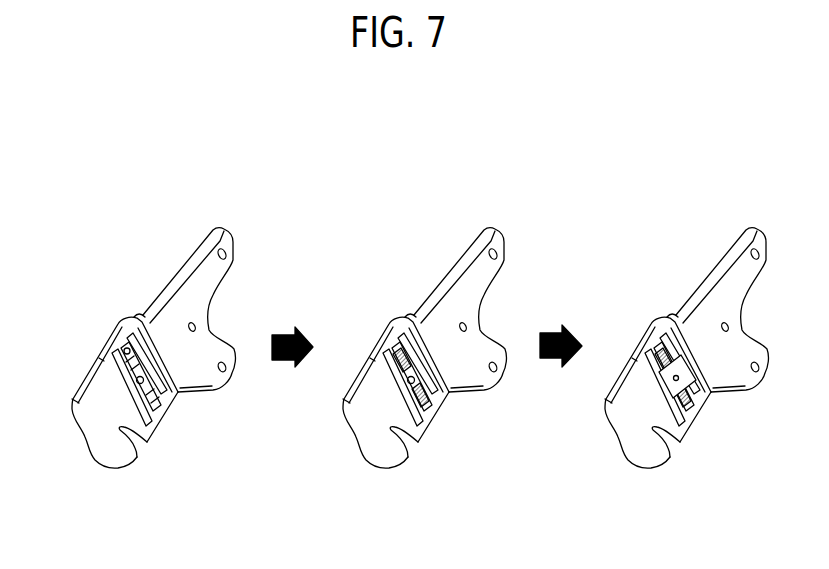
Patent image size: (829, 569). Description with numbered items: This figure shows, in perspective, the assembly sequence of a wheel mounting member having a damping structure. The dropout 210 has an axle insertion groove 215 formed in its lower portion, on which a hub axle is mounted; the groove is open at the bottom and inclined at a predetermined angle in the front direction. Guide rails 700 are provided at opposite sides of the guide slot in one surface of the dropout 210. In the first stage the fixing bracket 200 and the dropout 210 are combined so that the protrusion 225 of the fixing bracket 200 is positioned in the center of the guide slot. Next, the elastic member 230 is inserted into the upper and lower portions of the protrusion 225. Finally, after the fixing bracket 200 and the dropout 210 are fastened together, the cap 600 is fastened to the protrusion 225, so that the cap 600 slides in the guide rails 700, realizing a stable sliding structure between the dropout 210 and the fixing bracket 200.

The fixing bracket 200 is at (193, 285).
The dropout 210 is at (105, 392).
The axle insertion groove 215 is at (127, 440).
The protrusion 225 is at (122, 355).
The guide rails 700 is at (163, 402).
The elastic member 230 is at (430, 407).
The cap 600 is at (670, 398).